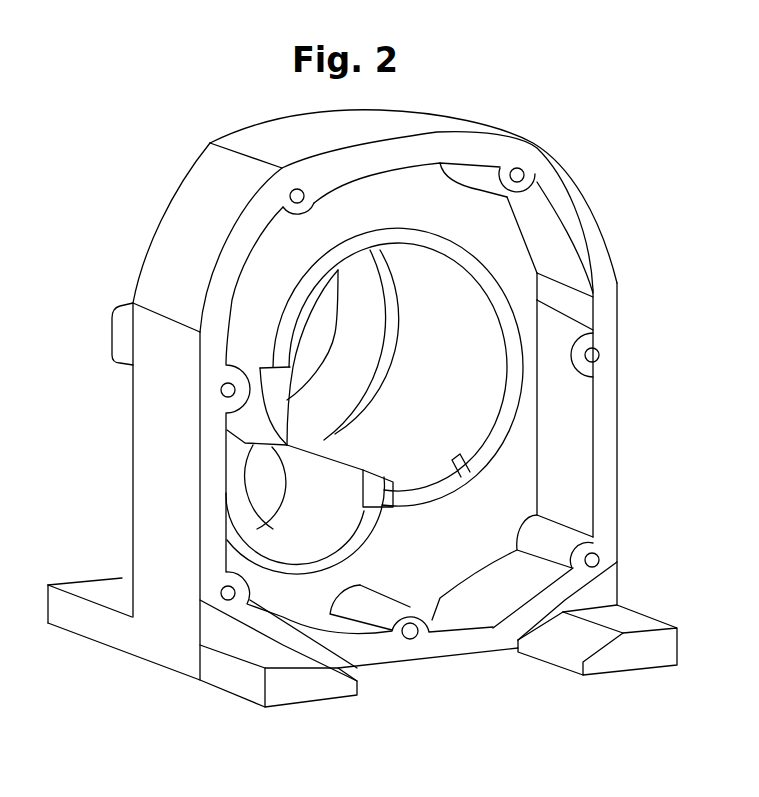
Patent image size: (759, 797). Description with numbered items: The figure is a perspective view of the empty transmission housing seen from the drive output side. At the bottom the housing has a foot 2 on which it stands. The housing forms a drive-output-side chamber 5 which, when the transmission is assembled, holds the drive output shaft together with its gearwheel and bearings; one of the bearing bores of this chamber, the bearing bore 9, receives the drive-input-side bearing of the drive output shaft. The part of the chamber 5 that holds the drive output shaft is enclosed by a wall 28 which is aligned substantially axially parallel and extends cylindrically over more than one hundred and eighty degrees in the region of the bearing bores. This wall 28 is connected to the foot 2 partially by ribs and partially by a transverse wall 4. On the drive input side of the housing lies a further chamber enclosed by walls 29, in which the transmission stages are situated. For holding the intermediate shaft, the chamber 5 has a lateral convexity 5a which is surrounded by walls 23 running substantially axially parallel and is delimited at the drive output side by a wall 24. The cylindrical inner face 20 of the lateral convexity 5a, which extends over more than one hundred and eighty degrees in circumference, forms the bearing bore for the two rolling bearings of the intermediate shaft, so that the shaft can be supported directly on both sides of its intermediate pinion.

The foot 2 is at (627, 623).
The transverse wall 4 is at (508, 259).
The drive-output-side chamber 5 is at (443, 422).
The lateral convexity 5a is at (280, 521).
The bearing bore 9 is at (483, 380).
The cylindrical inner face 20 is at (283, 498).
The walls 23 is at (275, 557).
The wall 24 is at (260, 470).
The wall 28 is at (508, 304).
The walls 29 is at (603, 492).